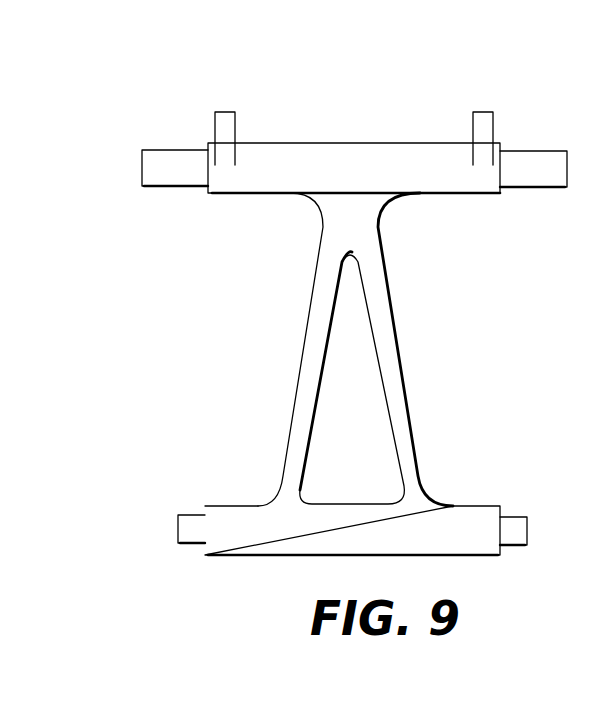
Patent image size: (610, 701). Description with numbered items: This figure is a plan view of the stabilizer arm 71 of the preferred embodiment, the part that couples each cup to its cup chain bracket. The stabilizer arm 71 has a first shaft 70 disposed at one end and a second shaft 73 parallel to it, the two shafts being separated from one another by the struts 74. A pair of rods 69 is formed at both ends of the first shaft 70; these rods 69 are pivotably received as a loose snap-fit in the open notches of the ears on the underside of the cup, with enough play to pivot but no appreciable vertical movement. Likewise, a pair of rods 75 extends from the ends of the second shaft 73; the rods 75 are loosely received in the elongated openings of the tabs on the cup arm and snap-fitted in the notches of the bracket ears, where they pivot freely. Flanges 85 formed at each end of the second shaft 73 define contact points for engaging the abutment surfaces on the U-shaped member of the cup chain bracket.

The rods 69 is at (175, 532).
The shaft 70 is at (243, 556).
The stabilizer arm 71 is at (480, 392).
The second shaft 73 is at (332, 143).
The struts 74 is at (289, 428).
The rods 75 is at (167, 186).
The flanges 85 is at (223, 108).